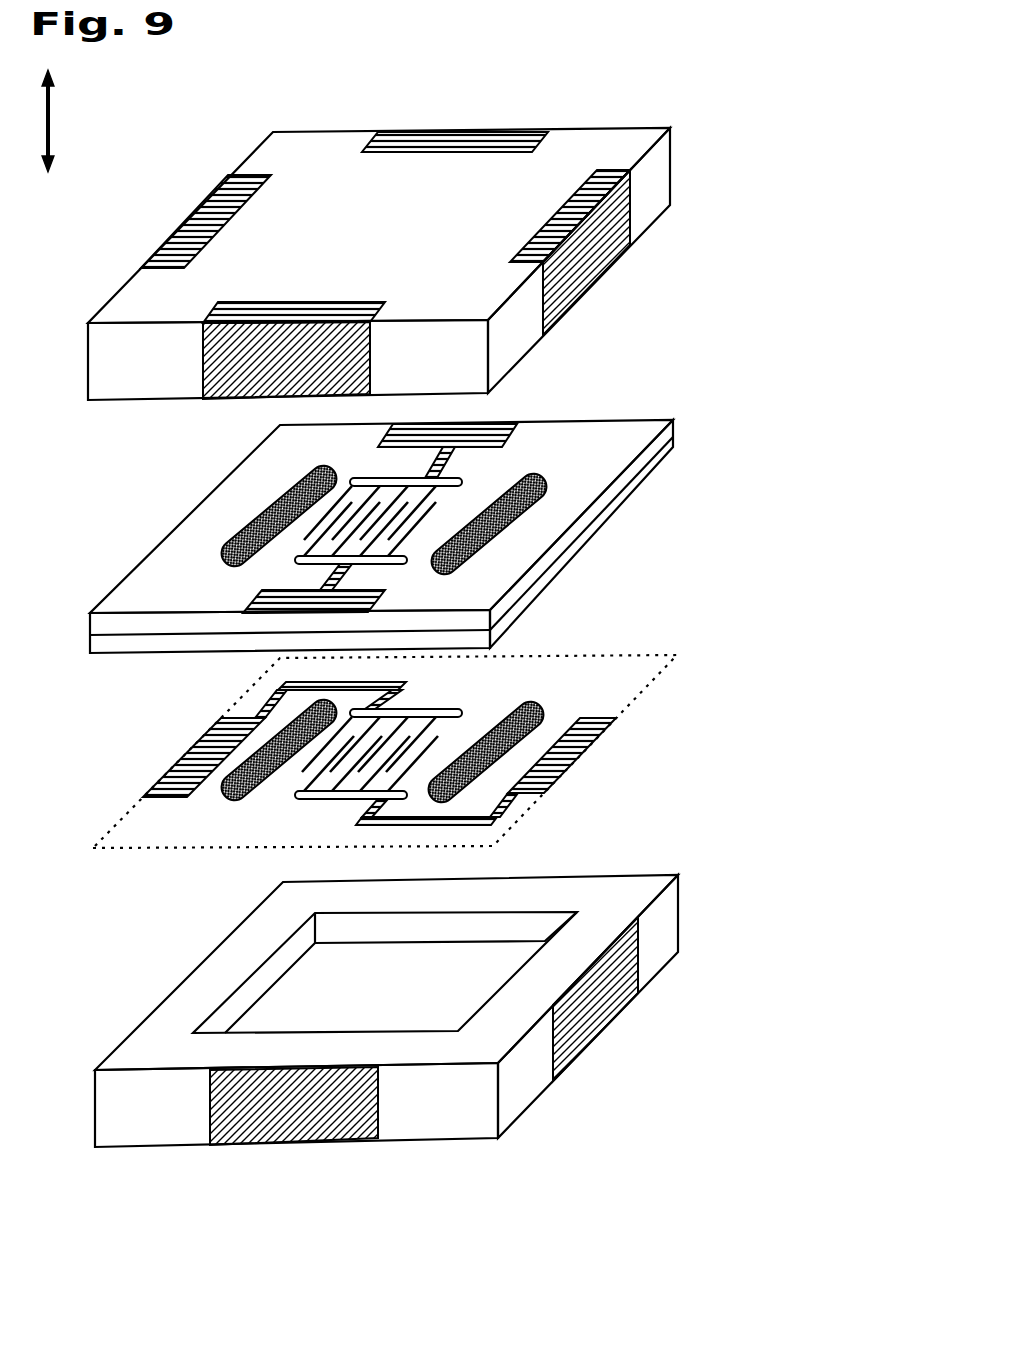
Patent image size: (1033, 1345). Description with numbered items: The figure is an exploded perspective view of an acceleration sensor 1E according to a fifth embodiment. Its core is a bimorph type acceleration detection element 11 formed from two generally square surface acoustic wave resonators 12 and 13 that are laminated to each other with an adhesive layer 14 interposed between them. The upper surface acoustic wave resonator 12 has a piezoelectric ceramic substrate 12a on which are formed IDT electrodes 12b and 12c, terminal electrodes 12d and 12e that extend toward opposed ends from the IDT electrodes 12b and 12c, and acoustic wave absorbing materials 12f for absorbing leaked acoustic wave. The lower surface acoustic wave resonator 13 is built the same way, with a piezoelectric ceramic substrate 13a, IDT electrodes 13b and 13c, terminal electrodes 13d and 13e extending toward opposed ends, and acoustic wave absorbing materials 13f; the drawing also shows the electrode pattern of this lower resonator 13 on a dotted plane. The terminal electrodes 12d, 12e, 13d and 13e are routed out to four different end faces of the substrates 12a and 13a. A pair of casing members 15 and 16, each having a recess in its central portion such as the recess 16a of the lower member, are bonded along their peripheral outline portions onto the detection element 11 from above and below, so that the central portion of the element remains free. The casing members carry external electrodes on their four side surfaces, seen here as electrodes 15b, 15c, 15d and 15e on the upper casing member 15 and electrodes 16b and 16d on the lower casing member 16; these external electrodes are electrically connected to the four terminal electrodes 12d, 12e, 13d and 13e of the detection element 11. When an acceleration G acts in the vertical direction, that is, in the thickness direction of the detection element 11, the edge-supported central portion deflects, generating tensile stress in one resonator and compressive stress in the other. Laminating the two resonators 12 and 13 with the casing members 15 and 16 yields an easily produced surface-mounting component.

The acceleration sensor 1E is at (772, 180).
The bimorph type acceleration detection element 11 is at (427, 605).
The surface acoustic wave resonator 12 is at (637, 420).
The piezoelectric ceramic substrate 12a is at (227, 490).
The IDT electrode 12b is at (338, 520).
The IDT electrode 12c is at (365, 503).
The terminal electrode 12d is at (262, 589).
The terminal electrode 12e is at (470, 423).
The acoustic wave absorbing material 12f is at (243, 537).
The surface acoustic wave resonator 13 is at (406, 651).
The piezoelectric ceramic substrate 13a is at (530, 600).
The IDT electrode 13b is at (302, 772).
The IDT electrode 13c is at (360, 757).
The terminal electrode 13d is at (573, 755).
The terminal electrode 13e is at (187, 763).
The acoustic wave absorbing material 13f is at (527, 711).
The adhesive layer 14 is at (665, 450).
The casing member 15 is at (262, 147).
The external electrode 15b is at (290, 307).
The external electrode 15c is at (440, 132).
The external electrode 15d is at (585, 278).
The external electrode 15e is at (200, 221).
The casing member 16 is at (423, 1133).
The recess 16a is at (277, 995).
The external electrode 16b is at (277, 1145).
The external electrode 16d is at (607, 1020).
The acceleration G is at (62, 121).